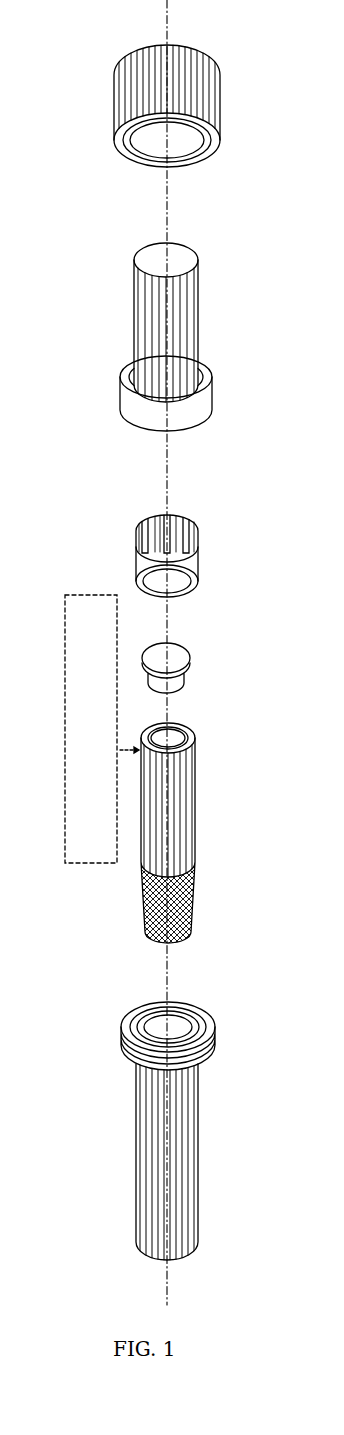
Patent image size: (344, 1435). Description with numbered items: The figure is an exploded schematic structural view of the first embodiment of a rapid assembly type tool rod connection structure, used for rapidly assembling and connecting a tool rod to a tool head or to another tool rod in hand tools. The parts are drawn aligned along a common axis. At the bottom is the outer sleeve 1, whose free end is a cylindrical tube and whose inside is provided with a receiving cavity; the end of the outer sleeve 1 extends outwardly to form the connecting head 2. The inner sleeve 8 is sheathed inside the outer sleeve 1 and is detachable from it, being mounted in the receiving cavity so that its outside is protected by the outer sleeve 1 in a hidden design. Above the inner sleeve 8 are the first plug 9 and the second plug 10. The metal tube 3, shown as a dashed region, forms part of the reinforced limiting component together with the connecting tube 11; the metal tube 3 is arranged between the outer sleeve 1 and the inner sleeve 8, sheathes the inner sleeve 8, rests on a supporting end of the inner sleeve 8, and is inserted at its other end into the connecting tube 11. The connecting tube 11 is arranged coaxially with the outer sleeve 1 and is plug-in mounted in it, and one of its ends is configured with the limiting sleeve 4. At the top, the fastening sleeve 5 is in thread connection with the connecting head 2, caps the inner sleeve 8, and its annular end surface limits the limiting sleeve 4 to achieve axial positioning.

The outer sleeve 1 is at (132, 1213).
The connecting head 2 is at (127, 1068).
The metal tube 3 is at (85, 848).
The limiting sleeve 4 is at (128, 412).
The fastening sleeve 5 is at (117, 90).
The inner sleeve 8 is at (178, 820).
The first plug 9 is at (177, 657).
The second plug 10 is at (138, 550).
The connecting tube 11 is at (148, 340).